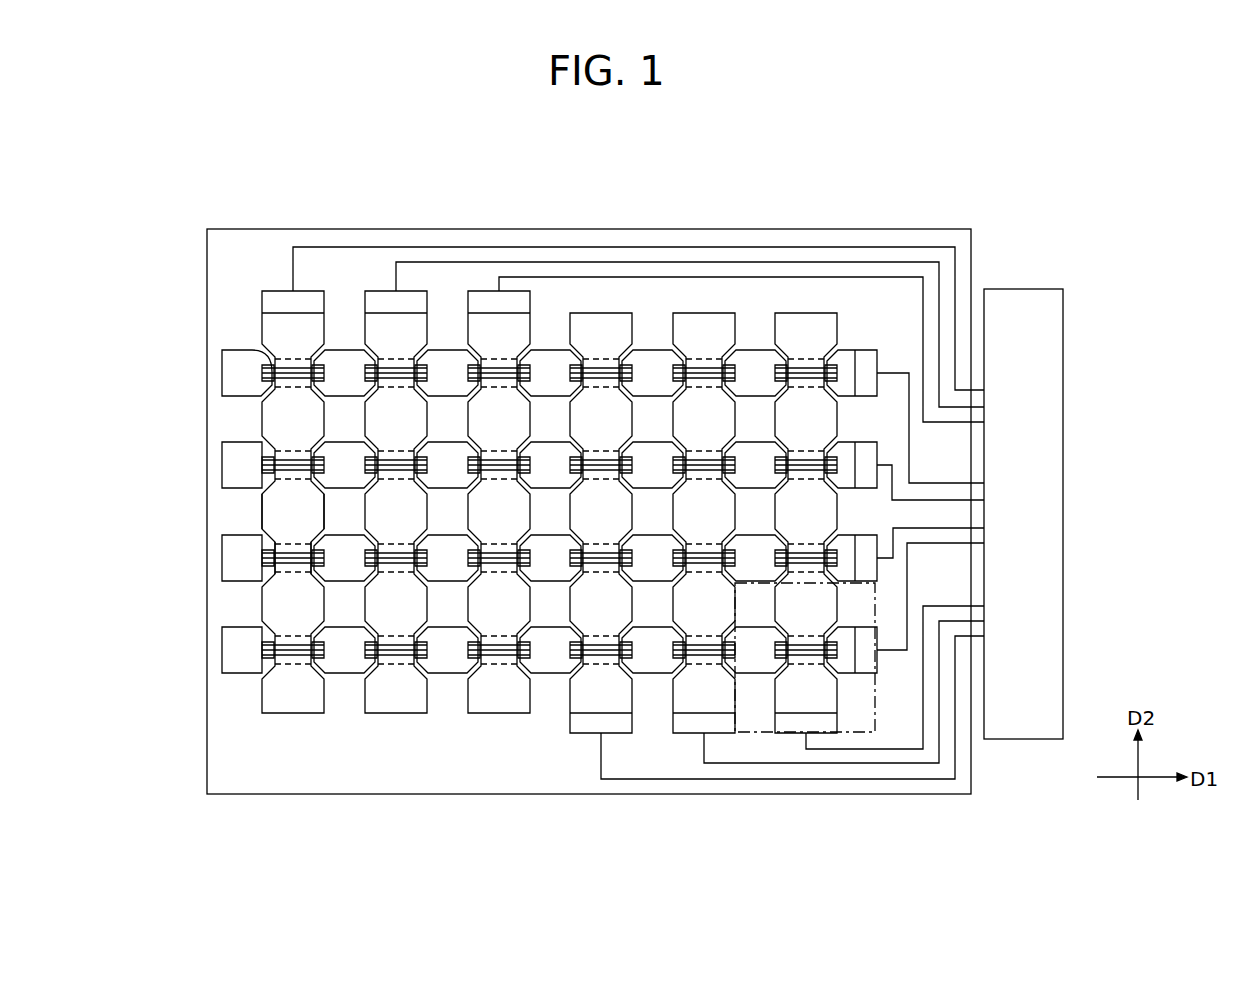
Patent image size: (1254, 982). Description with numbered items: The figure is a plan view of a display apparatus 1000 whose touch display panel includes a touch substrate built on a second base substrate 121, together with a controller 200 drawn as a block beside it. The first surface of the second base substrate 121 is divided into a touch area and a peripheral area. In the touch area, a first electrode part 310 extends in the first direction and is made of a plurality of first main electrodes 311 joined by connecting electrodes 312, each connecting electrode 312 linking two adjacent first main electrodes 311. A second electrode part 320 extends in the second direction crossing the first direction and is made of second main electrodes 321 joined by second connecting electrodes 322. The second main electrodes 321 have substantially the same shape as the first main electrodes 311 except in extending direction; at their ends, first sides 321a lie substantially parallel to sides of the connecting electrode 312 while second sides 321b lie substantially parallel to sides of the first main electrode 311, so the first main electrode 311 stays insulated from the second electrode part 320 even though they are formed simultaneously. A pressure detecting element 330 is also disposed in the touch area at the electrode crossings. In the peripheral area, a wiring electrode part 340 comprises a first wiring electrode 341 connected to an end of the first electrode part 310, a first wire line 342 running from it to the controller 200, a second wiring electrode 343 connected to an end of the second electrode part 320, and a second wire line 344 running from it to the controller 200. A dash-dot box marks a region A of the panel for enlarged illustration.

The display apparatus 1000 is at (607, 191).
The second base substrate 121 is at (268, 229).
The controller 200 is at (1025, 289).
The first electrode part 310 is at (143, 342).
The first main electrode 311 is at (222, 382).
The connecting electrode 312 is at (232, 356).
The second electrode part 320 is at (318, 833).
The second main electrode 321 is at (299, 713).
The first side 321a is at (293, 543).
The second side 321b is at (318, 522).
The second connecting electrode 322 is at (277, 636).
The pressure detecting element 330 is at (318, 646).
The wiring electrode part 340 is at (953, 833).
The first wiring electrode 341 is at (868, 663).
The first wire line 342 is at (907, 545).
The second wiring electrode 343 is at (583, 720).
The second wire line 344 is at (725, 780).
The region A is at (876, 607).